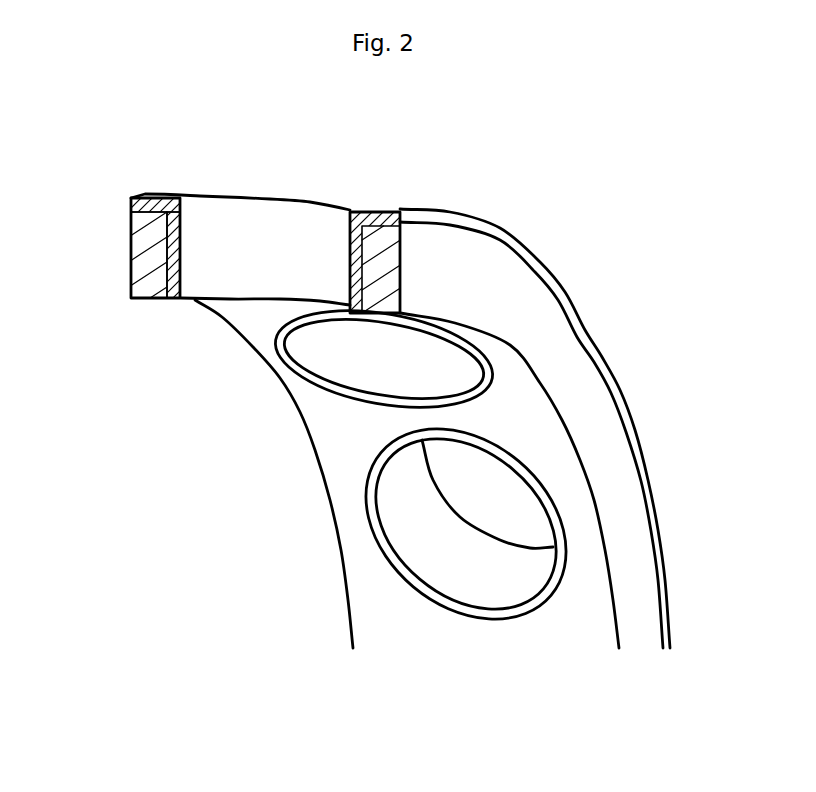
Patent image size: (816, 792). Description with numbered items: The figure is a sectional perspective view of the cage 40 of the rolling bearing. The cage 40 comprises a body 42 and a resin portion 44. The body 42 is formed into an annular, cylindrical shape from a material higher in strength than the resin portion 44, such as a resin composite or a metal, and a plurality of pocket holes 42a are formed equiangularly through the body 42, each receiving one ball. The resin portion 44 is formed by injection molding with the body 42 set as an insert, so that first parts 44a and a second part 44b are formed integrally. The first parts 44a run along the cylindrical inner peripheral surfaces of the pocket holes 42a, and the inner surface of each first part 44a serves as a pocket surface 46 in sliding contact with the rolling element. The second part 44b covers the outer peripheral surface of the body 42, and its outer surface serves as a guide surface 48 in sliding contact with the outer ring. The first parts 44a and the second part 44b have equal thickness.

The cage 40 is at (522, 198).
The body 42 is at (132, 255).
The pocket holes 42a is at (294, 228).
The resin portion 44 is at (128, 201).
The first parts 44a is at (182, 245).
The second part 44b is at (150, 203).
The pocket surface 46 is at (412, 505).
The guide surface 48 is at (383, 208).